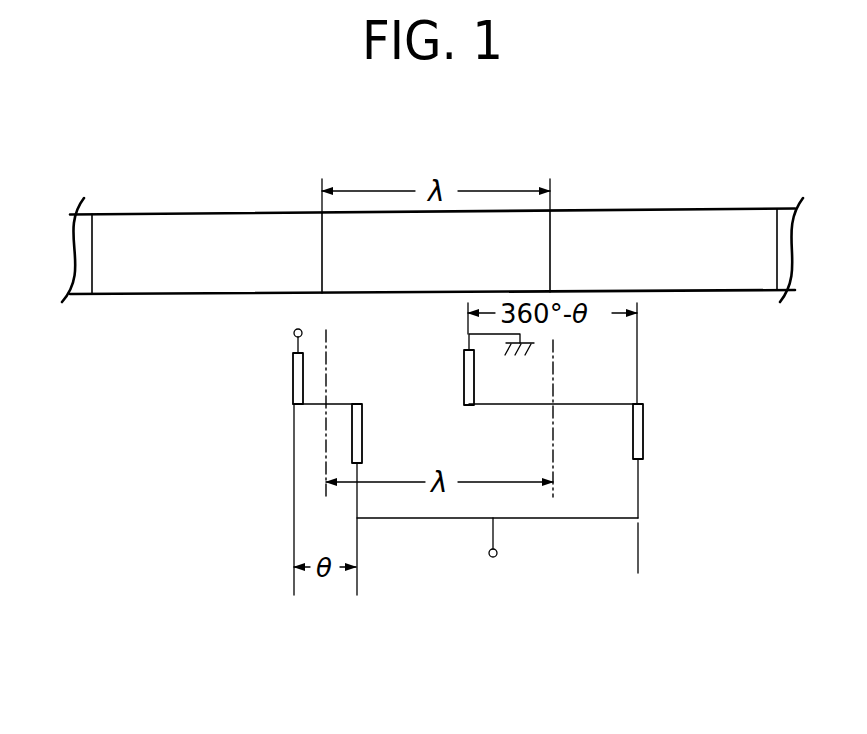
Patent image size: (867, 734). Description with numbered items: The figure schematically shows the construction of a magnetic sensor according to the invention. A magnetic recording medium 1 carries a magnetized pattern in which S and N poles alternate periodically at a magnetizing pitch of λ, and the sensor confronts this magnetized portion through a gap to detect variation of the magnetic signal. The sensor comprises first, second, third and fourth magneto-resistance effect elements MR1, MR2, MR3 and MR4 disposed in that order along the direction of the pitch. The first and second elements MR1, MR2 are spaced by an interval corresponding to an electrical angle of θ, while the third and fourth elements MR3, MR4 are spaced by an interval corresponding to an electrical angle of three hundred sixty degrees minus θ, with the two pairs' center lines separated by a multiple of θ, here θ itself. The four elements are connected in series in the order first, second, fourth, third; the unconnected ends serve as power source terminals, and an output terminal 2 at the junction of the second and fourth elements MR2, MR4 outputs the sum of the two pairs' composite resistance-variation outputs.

The magnetic recording medium 1 is at (643, 211).
The output terminal 2 is at (498, 554).
The first magneto-resistance effect element MR1 is at (295, 462).
The second magneto-resistance effect element MR2 is at (384, 499).
The third magneto-resistance effect element MR3 is at (522, 369).
The fourth magneto-resistance effect element MR4 is at (666, 438).